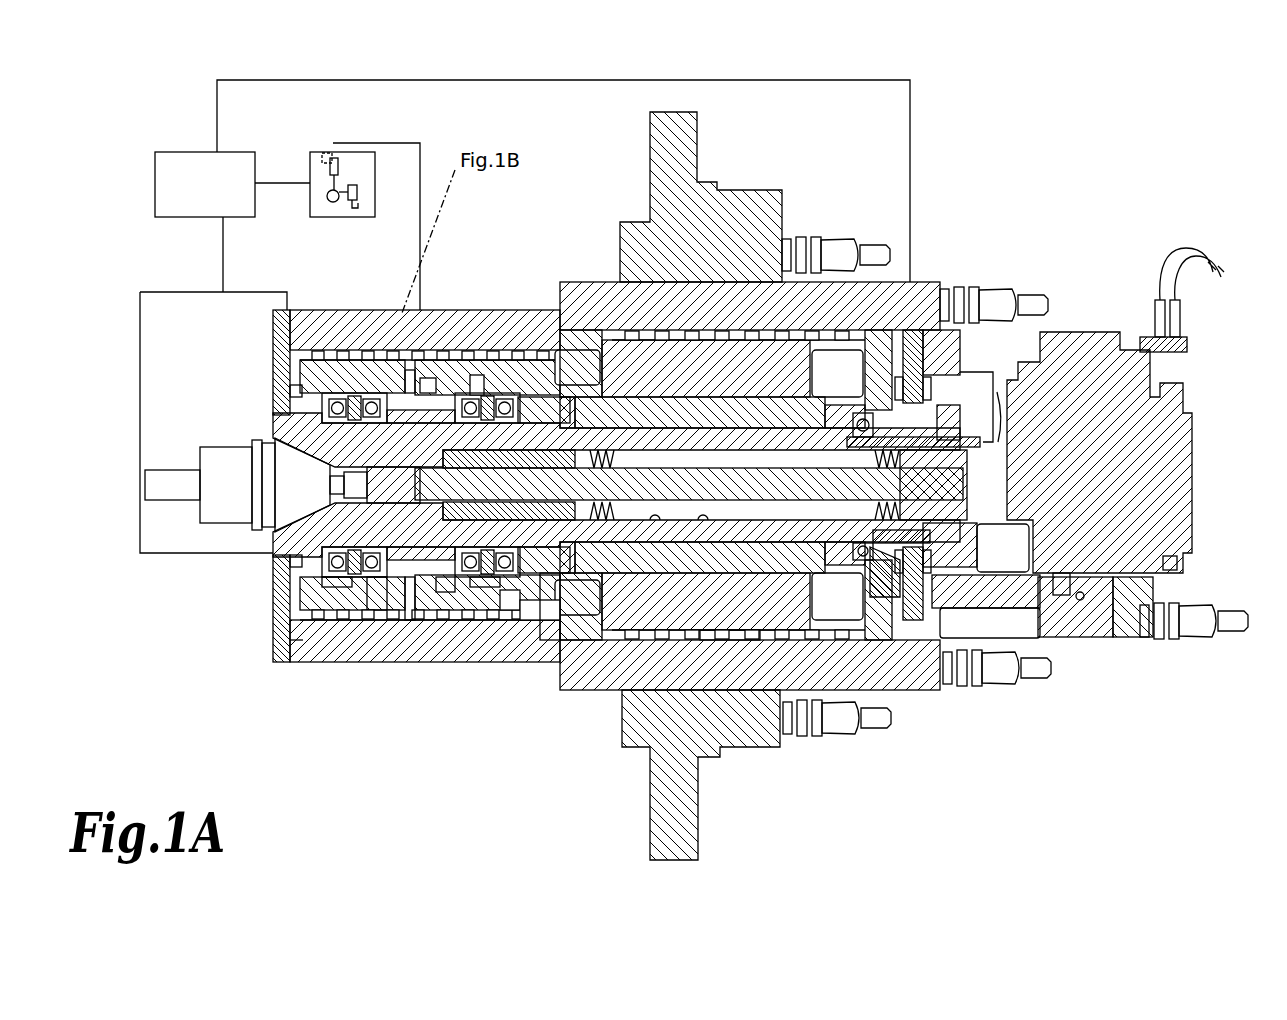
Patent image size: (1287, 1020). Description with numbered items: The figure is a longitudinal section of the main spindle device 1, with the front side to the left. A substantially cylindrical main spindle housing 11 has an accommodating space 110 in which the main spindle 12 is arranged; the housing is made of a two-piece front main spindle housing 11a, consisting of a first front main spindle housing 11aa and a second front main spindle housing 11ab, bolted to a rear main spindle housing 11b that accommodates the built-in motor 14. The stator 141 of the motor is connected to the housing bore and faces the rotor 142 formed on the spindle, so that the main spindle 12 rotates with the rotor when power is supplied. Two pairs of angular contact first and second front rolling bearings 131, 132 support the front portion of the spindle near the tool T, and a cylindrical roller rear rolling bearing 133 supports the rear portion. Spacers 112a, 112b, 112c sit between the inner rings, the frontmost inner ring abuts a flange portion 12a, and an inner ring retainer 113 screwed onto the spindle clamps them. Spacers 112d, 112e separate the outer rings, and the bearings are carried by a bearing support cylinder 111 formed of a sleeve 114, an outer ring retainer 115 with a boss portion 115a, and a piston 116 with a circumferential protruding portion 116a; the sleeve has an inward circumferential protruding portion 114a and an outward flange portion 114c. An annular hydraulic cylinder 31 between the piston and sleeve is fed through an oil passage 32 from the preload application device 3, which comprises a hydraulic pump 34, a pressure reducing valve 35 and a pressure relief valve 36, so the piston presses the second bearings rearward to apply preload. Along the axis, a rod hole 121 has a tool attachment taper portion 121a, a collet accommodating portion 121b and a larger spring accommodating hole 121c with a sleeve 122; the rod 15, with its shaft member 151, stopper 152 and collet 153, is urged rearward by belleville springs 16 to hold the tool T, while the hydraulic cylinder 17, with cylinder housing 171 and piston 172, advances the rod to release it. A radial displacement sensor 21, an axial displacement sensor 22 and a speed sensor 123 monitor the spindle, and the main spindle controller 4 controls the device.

The main spindle device 1 is at (170, 136).
The preload application device 3 is at (328, 158).
The main spindle controller 4 is at (156, 185).
The main spindle housing 11 is at (555, 583).
The front main spindle housing 11a is at (452, 781).
The first front main spindle housing 11aa is at (352, 677).
The second front main spindle housing 11ab is at (487, 676).
The rear main spindle housing 11b is at (665, 700).
The main spindle 12 is at (381, 578).
The flange portion 12a is at (298, 578).
The built-in motor 14 is at (742, 486).
The stator 141 is at (612, 358).
The rotor 142 is at (773, 645).
The rod 15 is at (600, 520).
The belleville springs 16 is at (600, 450).
The hydraulic cylinder 17 is at (1140, 486).
The radial displacement sensor 21 is at (282, 416).
The axial displacement sensor 22 is at (268, 566).
The hydraulic cylinder 31 is at (430, 378).
The oil passage 32 is at (437, 378).
The hydraulic pump 34 is at (332, 190).
The pressure reducing valve 35 is at (337, 160).
The pressure relief valve 36 is at (360, 192).
The accommodating space 110 is at (540, 365).
The bearing support cylinder 111 is at (310, 244).
The spacer 112a is at (300, 620).
The spacer 112b is at (511, 604).
The spacer 112c is at (425, 582).
The spacer 112d is at (283, 650).
The spacer 112e is at (518, 610).
The inner ring retainer 113 is at (556, 592).
The sleeve 114 is at (330, 365).
The circumferential protruding portion 114a is at (366, 380).
The flange portion 114c is at (410, 368).
The outer ring retainer 115 is at (280, 346).
The boss portion 115a is at (302, 395).
The piston 116 is at (498, 350).
The circumferential protruding portion 116a is at (478, 372).
The rod hole 121 is at (618, 592).
The tool attachment taper portion 121a is at (282, 463).
The collet accommodating portion 121b is at (368, 592).
The spring accommodating hole 121c is at (727, 645).
The sleeve 122 is at (444, 582).
The speed sensor 123 is at (911, 340).
The first front rolling bearings 131 is at (338, 598).
The second front rolling bearings 132 is at (487, 592).
The rear rolling bearing 133 is at (946, 614).
The shaft member 151 is at (842, 640).
The stopper 152 is at (722, 511).
The collet 153 is at (336, 492).
The cylinder housing 171 is at (1094, 640).
The piston 172 is at (1187, 494).
The tool T is at (200, 466).